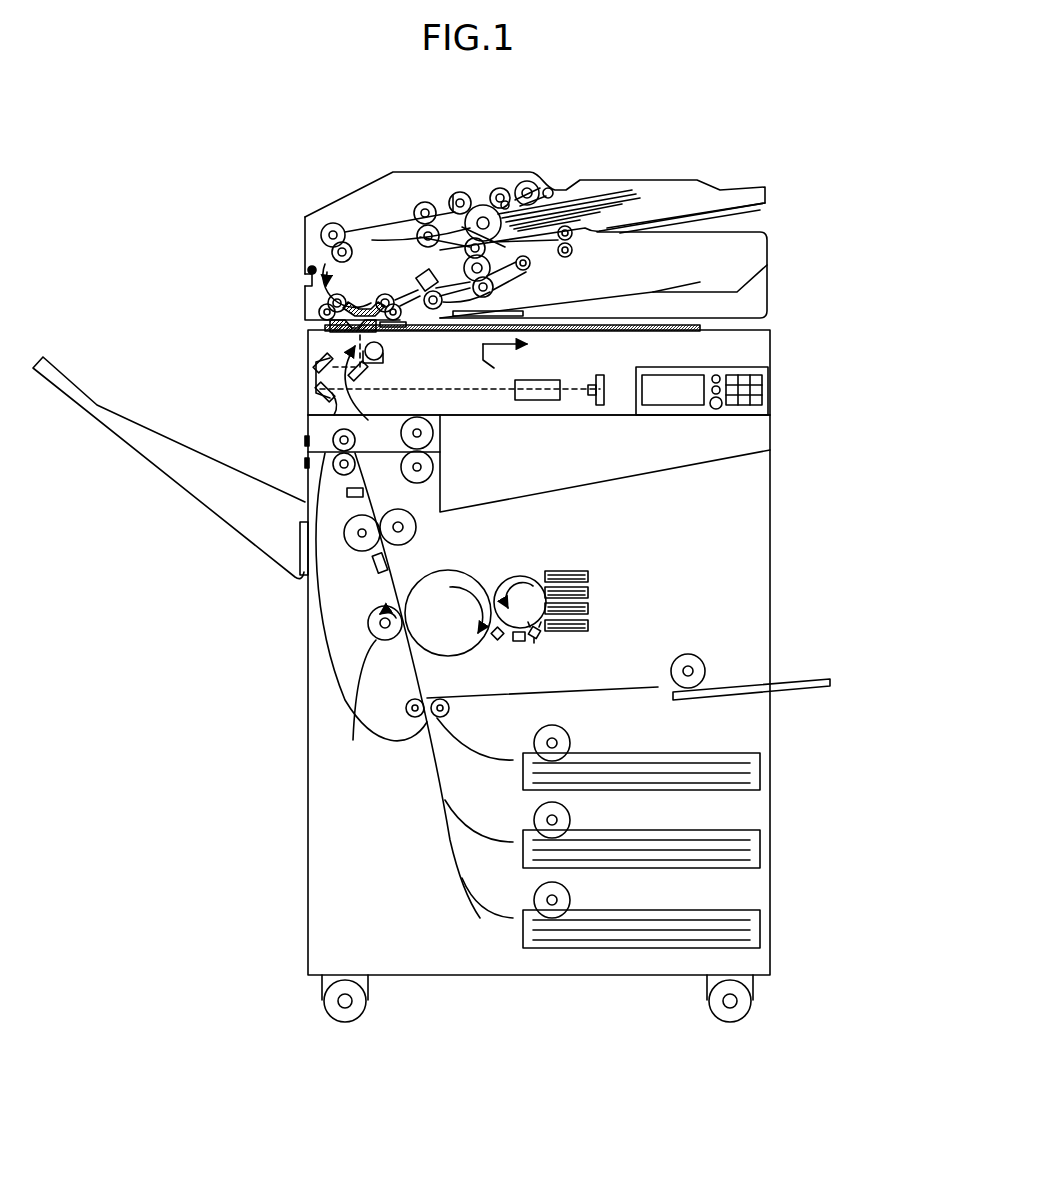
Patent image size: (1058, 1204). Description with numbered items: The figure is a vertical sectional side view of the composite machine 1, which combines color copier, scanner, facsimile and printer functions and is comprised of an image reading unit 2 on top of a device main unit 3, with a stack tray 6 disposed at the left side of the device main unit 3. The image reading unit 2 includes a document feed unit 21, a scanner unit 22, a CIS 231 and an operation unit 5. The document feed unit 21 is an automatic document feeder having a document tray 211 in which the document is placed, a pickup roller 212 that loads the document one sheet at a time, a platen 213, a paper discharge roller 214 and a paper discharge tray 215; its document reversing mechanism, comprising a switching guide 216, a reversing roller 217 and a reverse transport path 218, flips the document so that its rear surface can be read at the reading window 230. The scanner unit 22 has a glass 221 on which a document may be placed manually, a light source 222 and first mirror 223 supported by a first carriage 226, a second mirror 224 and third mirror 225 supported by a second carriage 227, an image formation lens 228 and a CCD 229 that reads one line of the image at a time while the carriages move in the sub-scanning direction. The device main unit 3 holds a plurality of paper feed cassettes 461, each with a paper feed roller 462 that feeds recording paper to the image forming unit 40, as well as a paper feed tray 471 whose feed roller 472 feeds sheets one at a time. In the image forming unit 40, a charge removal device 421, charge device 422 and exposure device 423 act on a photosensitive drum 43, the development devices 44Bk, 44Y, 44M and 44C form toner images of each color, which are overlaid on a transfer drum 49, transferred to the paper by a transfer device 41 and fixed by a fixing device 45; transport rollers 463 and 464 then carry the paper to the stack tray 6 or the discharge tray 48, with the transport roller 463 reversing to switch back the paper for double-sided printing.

The composite machine 1 is at (254, 184).
The image reading unit 2 is at (274, 296).
The device main unit 3 is at (743, 560).
The operation unit 5 is at (718, 414).
The stack tray 6 is at (214, 520).
The document feed unit 21 is at (772, 290).
The scanner unit 22 is at (772, 340).
The image forming unit 40 is at (354, 606).
The transfer device 41 is at (351, 704).
The photosensitive drum 43 is at (528, 588).
The development device 44C is at (588, 575).
The development device 44M is at (588, 593).
The development device 44Y is at (588, 610).
The development device 44Bk is at (588, 627).
The fixing device 45 is at (362, 548).
The discharge tray 48 is at (682, 472).
The transfer drum 49 is at (440, 582).
The document tray 211 is at (664, 210).
The pickup roller 212 is at (537, 183).
The platen 213 is at (362, 303).
The paper discharge roller 214 is at (485, 292).
The paper discharge tray 215 is at (668, 284).
The switching guide 216 is at (544, 276).
The reversing roller 217 is at (574, 246).
The reverse transport path 218 is at (415, 250).
The glass 221 is at (534, 341).
The light source 222 is at (372, 366).
The first mirror 223 is at (368, 378).
The second mirror 224 is at (318, 358).
The third mirror 225 is at (316, 392).
The first carriage 226 is at (385, 350).
The second carriage 227 is at (320, 414).
The image formation lens 228 is at (537, 425).
The CCD 229 is at (597, 405).
The reading window 230 is at (340, 336).
The CIS 231 is at (415, 290).
The charge removal device 421 is at (496, 640).
The charge device 422 is at (518, 642).
The exposure device 423 is at (540, 640).
The paper feed cassette 461 is at (760, 775).
The paper feed roller 462 is at (570, 742).
The transport roller 463 is at (436, 432).
The transport roller 464 is at (325, 438).
The paper feed tray 471 is at (815, 682).
The feed roller 472 is at (690, 653).